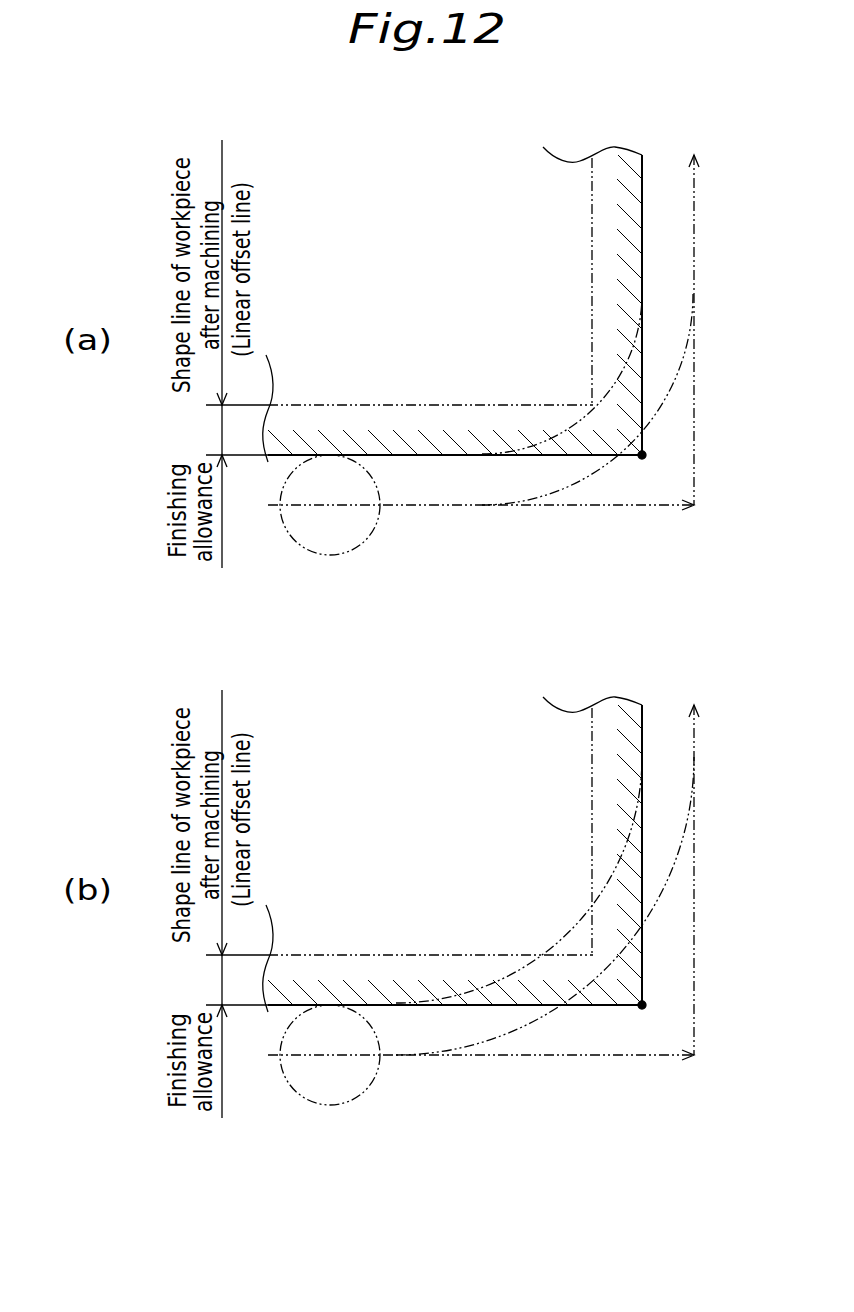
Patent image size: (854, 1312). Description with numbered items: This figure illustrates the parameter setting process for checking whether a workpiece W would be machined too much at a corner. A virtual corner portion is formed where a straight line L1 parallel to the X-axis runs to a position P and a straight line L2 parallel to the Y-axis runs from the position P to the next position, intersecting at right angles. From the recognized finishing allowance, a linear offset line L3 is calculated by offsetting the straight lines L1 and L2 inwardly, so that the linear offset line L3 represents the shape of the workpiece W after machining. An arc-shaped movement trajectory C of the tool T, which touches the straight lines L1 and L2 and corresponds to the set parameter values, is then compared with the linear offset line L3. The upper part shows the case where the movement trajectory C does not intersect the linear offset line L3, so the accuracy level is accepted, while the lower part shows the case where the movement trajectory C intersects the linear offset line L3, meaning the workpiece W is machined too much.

The straight line L1 is at (430, 456).
The straight line L2 is at (642, 267).
The linear offset line L3 is at (352, 953).
The movement trajectory C is at (565, 935).
The position P is at (646, 453).
The tool T is at (330, 556).
The workpiece W is at (477, 452).